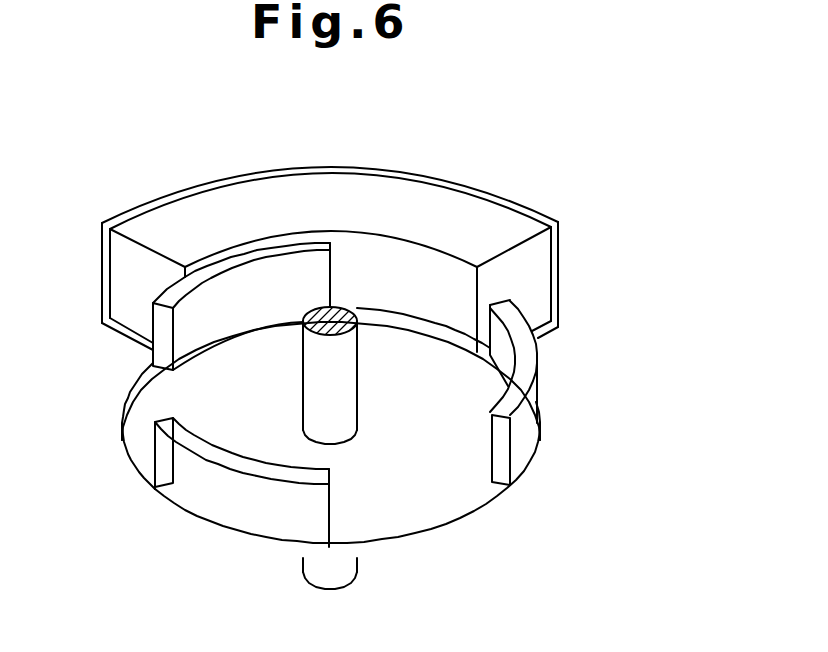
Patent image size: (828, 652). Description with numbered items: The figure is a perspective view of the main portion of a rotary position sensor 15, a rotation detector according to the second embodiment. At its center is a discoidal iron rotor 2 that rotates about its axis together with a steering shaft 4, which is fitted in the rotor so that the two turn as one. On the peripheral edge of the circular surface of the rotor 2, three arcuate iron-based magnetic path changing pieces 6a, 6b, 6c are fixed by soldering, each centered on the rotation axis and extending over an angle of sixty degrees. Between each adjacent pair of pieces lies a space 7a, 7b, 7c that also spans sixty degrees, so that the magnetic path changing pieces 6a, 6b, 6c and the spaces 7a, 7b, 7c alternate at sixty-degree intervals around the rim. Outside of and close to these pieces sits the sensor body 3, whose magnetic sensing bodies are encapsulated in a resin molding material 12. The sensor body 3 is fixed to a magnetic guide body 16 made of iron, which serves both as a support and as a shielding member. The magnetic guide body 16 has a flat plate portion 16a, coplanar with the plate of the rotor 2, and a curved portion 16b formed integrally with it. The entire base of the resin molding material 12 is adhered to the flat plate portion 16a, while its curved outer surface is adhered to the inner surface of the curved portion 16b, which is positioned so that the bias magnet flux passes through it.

The rotor 2 is at (498, 500).
The sensor body 3 is at (548, 268).
The steering shaft 4 is at (335, 313).
The magnetic path changing piece 6a is at (168, 298).
The magnetic path changing piece 6b is at (518, 399).
The magnetic path changing piece 6c is at (203, 445).
The space 7a is at (418, 342).
The space 7b is at (423, 528).
The space 7c is at (140, 388).
The resin molding material 12 is at (449, 332).
The rotary position sensor 15 is at (667, 235).
The magnetic guide body 16 is at (570, 313).
The flat plate portion 16a is at (540, 333).
The curved portion 16b is at (460, 188).